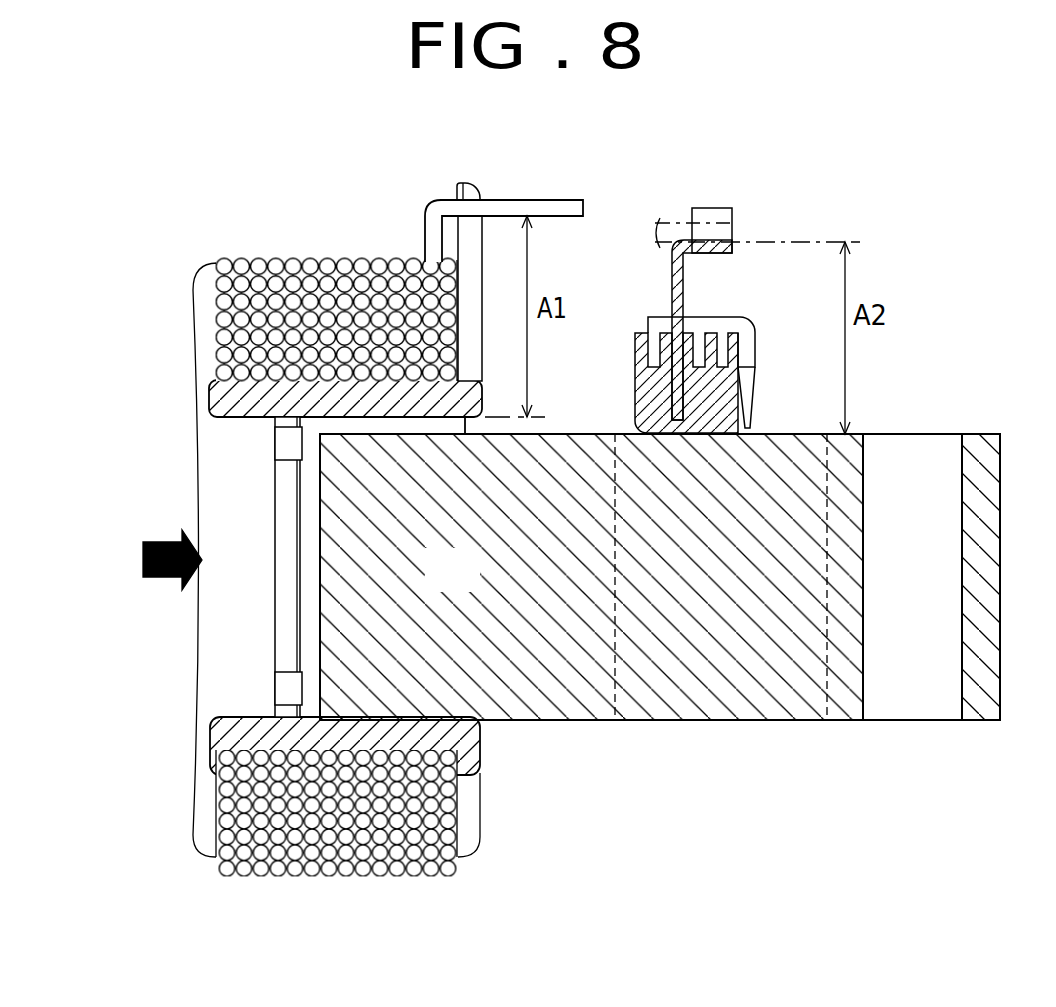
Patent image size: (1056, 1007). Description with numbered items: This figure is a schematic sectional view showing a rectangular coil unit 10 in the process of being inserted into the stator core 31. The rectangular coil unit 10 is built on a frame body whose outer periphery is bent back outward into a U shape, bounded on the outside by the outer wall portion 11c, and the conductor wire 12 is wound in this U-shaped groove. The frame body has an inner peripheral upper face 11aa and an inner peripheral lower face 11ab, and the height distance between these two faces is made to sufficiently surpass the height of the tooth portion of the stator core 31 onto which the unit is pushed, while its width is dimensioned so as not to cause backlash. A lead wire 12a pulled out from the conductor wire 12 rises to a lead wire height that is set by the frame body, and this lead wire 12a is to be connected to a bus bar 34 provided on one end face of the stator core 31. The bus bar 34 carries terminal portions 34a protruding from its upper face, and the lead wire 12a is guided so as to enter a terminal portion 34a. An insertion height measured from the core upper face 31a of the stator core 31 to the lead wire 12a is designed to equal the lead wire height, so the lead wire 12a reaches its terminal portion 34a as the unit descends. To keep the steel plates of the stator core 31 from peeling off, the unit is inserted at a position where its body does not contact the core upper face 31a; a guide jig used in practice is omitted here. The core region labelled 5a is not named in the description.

The rectangular coil unit 10 is at (372, 201).
The conductor wire 12 is at (340, 257).
The lead wire 12a is at (585, 207).
The outer wall portion 11c is at (193, 322).
The inner peripheral upper face 11aa is at (227, 418).
The inner peripheral lower face 11ab is at (262, 717).
The stator core 5a is at (475, 586).
The stator core 31 is at (978, 434).
The core upper face 31a is at (566, 434).
The bus bar 34 is at (748, 382).
The terminal portion 34a is at (720, 253).